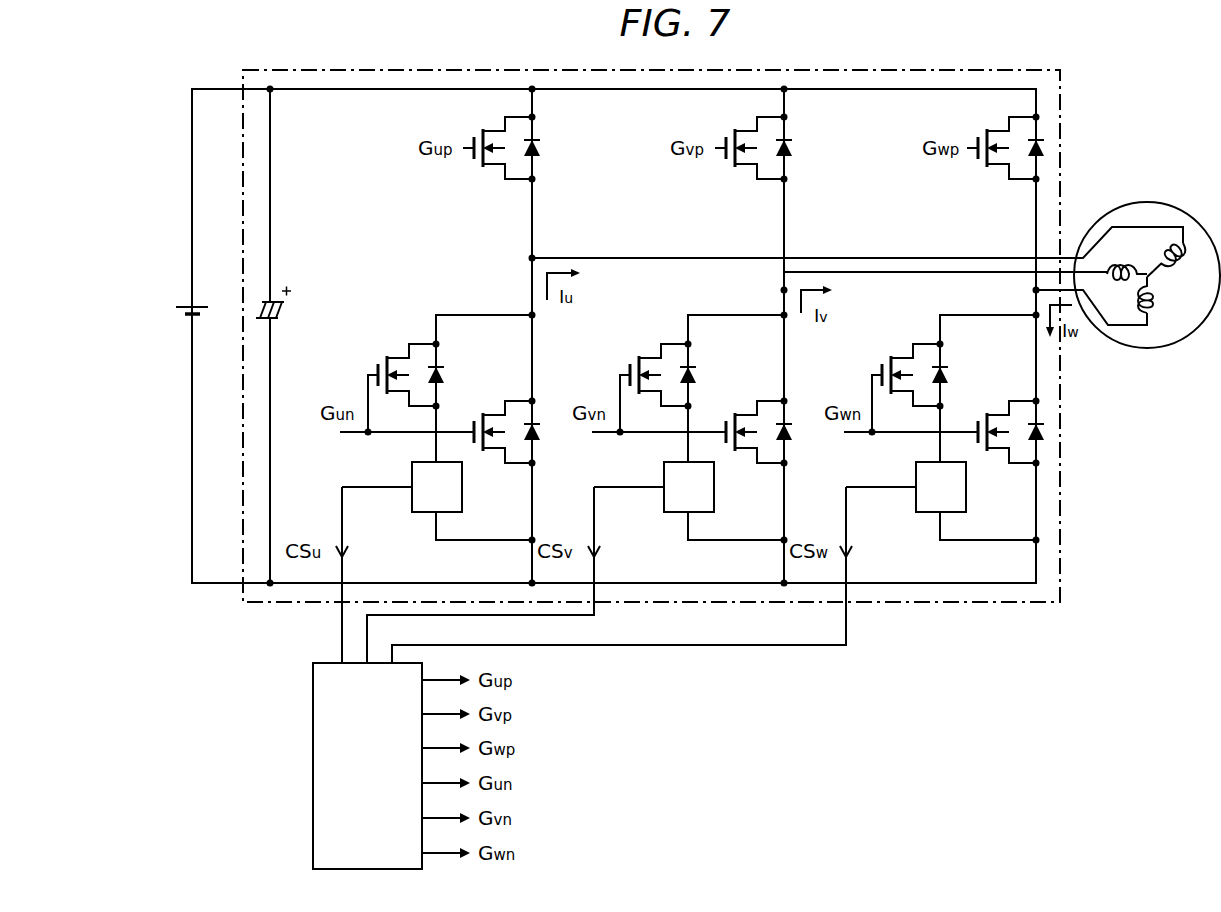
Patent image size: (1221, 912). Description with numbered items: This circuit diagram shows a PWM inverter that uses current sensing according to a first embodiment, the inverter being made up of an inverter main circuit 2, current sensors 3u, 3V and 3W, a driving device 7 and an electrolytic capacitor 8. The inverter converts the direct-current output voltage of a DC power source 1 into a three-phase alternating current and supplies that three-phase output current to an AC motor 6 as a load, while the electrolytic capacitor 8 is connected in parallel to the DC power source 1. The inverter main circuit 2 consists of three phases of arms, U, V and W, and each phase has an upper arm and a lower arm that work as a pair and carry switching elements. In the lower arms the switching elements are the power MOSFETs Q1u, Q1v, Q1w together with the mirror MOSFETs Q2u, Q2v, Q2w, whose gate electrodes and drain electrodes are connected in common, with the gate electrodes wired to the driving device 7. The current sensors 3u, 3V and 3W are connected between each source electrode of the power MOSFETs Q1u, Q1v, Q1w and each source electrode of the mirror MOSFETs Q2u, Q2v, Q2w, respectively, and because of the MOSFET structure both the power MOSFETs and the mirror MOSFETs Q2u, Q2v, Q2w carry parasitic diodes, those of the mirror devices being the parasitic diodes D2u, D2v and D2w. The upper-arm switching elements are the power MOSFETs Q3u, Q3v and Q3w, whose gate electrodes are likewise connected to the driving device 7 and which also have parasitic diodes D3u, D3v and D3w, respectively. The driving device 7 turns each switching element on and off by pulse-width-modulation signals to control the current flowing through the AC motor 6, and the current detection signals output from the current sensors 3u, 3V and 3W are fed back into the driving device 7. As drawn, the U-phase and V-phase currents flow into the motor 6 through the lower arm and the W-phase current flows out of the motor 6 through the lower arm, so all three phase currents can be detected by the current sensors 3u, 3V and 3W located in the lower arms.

The DC power source 1 is at (185, 307).
The inverter main circuit 2 is at (1005, 604).
The current sensor 3u is at (424, 514).
The current sensor 3V is at (676, 514).
The current sensor 3W is at (928, 514).
The AC motor 6 is at (1147, 349).
The driving device 7 is at (313, 770).
The electrolytic capacitor 8 is at (278, 320).
The power MOSFET Q3u is at (494, 167).
The power MOSFET Q3v is at (746, 167).
The power MOSFET Q3w is at (998, 167).
The parasitic diode D3u is at (540, 148).
The parasitic diode D3v is at (792, 148).
The parasitic diode D3w is at (1044, 148).
The mirror MOSFET Q2u is at (386, 355).
The mirror MOSFET Q2v is at (638, 355).
The mirror MOSFET Q2w is at (890, 355).
The parasitic diode D2u is at (444, 375).
The parasitic diode D2v is at (696, 375).
The parasitic diode D2w is at (948, 375).
The power MOSFET Q1u is at (494, 451).
The power MOSFET Q1v is at (746, 451).
The power MOSFET Q1w is at (998, 451).